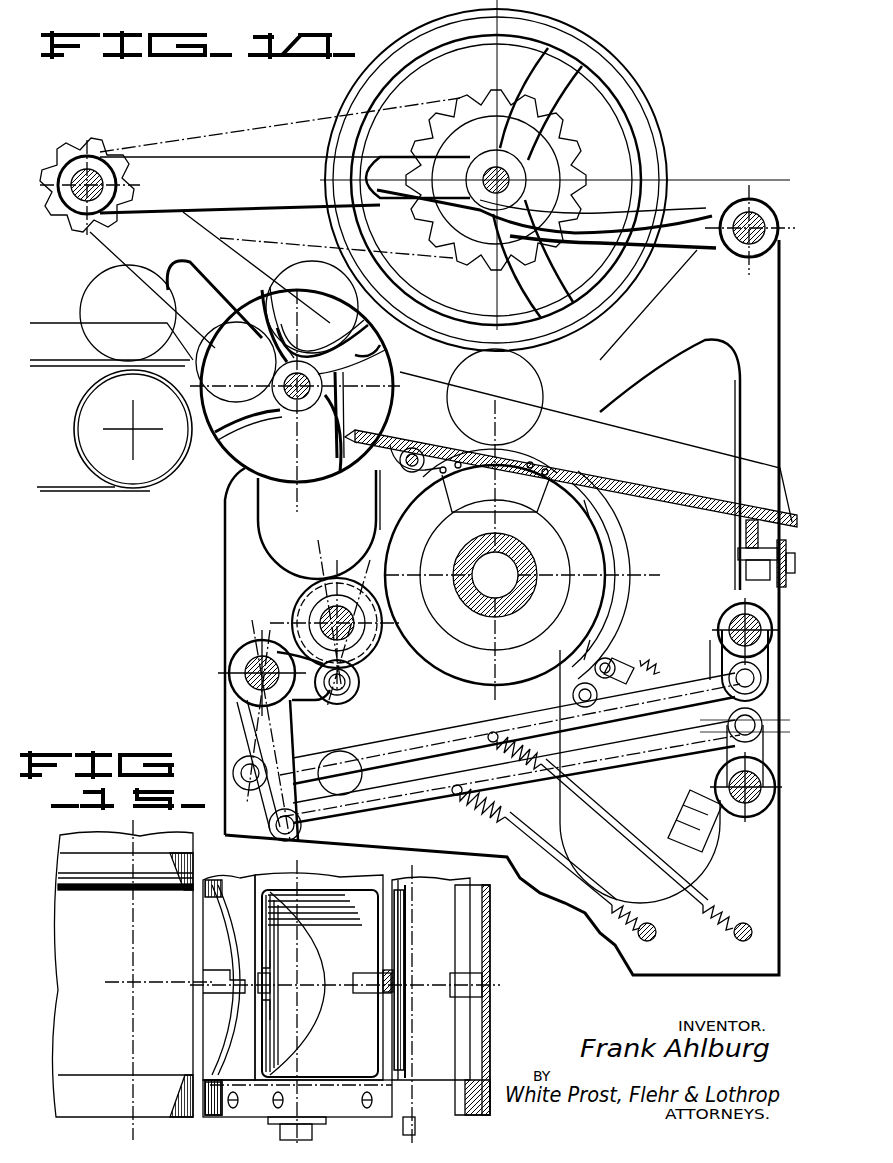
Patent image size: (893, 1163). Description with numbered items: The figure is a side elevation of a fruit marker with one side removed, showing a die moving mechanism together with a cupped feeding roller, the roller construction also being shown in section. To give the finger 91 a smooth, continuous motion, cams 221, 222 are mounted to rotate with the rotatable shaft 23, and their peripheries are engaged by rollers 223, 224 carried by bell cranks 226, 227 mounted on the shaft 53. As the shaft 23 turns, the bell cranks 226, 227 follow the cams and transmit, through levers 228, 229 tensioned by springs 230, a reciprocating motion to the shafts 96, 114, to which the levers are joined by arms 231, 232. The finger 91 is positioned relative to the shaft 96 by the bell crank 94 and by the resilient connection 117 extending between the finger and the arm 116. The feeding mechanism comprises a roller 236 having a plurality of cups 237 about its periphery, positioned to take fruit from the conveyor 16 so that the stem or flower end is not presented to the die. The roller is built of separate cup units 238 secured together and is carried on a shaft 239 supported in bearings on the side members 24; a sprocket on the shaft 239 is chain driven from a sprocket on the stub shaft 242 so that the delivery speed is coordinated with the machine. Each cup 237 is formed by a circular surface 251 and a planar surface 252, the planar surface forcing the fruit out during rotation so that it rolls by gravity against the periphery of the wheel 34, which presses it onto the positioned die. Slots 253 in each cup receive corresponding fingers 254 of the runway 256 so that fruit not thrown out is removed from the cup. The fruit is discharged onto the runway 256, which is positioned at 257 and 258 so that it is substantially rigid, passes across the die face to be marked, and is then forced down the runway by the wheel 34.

In FIG. 14, the conveyor 16 is at (93, 478).
In FIG. 15, the conveyor 16 is at (100, 1036).
In FIG. 14, the rotatable shaft 23 is at (320, 615).
In FIG. 14, the side members 24 is at (225, 536).
In FIG. 14, the wheel 34 is at (592, 290).
In FIG. 14, the shaft 53 is at (240, 665).
In FIG. 14, the finger 91 is at (640, 560).
In FIG. 14, the bell crank 94 is at (690, 795).
In FIG. 14, the shaft 96 is at (750, 815).
In FIG. 14, the shaft 114 is at (740, 616).
In FIG. 14, the arm 116 is at (725, 676).
In FIG. 14, the resilient connection 117 is at (630, 672).
In FIG. 14, the cam 221 is at (305, 590).
In FIG. 14, the cam 222 is at (315, 585).
In FIG. 14, the roller 223 is at (360, 678).
In FIG. 14, the roller 224 is at (360, 690).
In FIG. 14, the bell crank 226 is at (240, 730).
In FIG. 14, the bell crank 227 is at (245, 712).
In FIG. 14, the lever 228 is at (465, 728).
In FIG. 14, the lever 229 is at (428, 805).
In FIG. 14, the springs 230 is at (660, 925).
In FIG. 14, the arm 231 is at (722, 645).
In FIG. 14, the arm 232 is at (726, 735).
In FIG. 14, the roller 236 is at (220, 485).
In FIG. 15, the roller 236 is at (395, 917).
In FIG. 14, the cups 237 is at (247, 378).
In FIG. 15, the cups 237 is at (336, 955).
In FIG. 14, the cup units 238 is at (262, 315).
In FIG. 15, the cup units 238 is at (285, 880).
In FIG. 14, the shaft 239 is at (340, 352).
In FIG. 15, the shaft 239 is at (312, 1130).
In FIG. 14, the stub shaft 242 is at (340, 770).
In FIG. 14, the circular surface 251 is at (320, 345).
In FIG. 15, the circular surface 251 is at (333, 1043).
In FIG. 14, the planar surface 252 is at (296, 322).
In FIG. 15, the planar surface 252 is at (272, 1015).
In FIG. 14, the slots 253 is at (293, 300).
In FIG. 15, the slots 253 is at (355, 990).
In FIG. 14, the fingers 254 is at (380, 437).
In FIG. 15, the fingers 254 is at (383, 978).
In FIG. 14, the runway 256 is at (672, 488).
In FIG. 15, the runway 256 is at (490, 953).
In FIG. 14, the runway positioning point 257 is at (395, 480).
In FIG. 15, the runway positioning point 257 is at (418, 1128).
In FIG. 14, the runway positioning point 258 is at (745, 530).